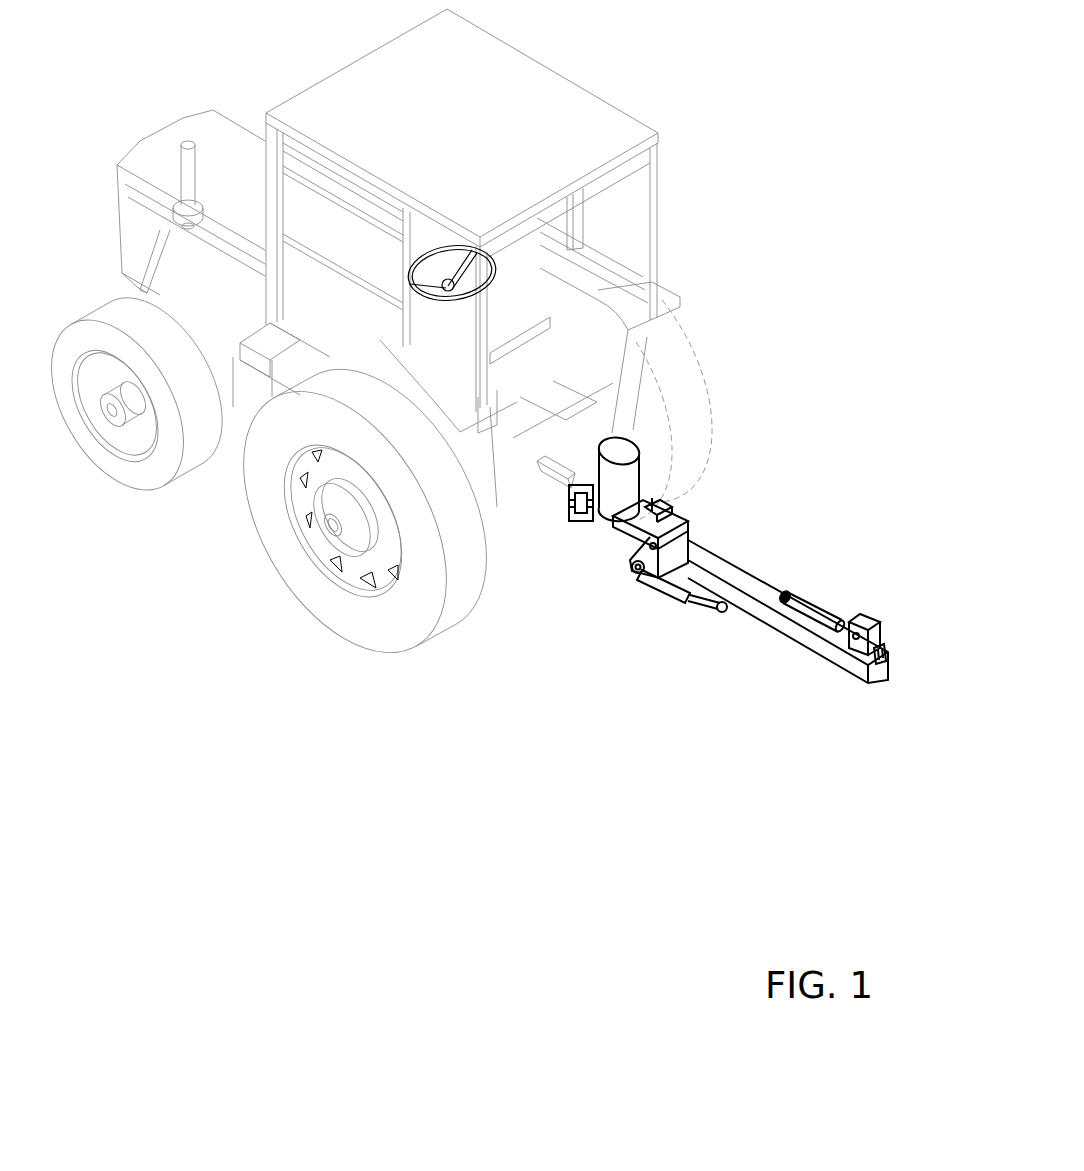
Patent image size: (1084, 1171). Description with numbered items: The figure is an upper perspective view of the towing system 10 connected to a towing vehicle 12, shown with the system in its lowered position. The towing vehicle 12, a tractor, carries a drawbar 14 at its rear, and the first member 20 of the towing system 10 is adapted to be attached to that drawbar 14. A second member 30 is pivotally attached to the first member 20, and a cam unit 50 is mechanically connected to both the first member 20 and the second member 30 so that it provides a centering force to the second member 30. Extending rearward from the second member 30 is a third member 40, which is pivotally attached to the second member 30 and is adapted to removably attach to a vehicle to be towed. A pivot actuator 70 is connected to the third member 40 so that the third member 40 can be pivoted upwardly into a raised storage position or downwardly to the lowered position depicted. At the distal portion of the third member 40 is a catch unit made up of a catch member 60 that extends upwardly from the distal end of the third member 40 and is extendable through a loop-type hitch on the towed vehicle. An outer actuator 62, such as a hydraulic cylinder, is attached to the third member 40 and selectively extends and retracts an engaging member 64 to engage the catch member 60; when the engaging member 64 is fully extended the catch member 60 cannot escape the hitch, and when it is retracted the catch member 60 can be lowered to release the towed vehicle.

The towing system 10 is at (662, 541).
The towing vehicle 12 is at (603, 98).
The drawbar 14 is at (560, 497).
The first member 20 is at (600, 522).
The second member 30 is at (642, 548).
The third member 40 is at (793, 640).
The cam unit 50 is at (645, 474).
The catch member 60 is at (876, 690).
The outer actuator 62 is at (807, 596).
The engaging member 64 is at (868, 636).
The pivot actuator 70 is at (665, 603).